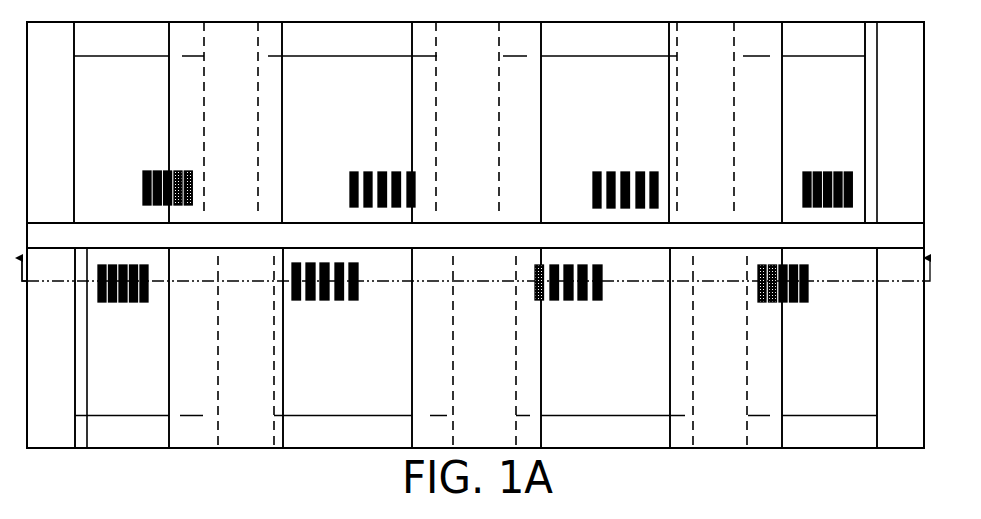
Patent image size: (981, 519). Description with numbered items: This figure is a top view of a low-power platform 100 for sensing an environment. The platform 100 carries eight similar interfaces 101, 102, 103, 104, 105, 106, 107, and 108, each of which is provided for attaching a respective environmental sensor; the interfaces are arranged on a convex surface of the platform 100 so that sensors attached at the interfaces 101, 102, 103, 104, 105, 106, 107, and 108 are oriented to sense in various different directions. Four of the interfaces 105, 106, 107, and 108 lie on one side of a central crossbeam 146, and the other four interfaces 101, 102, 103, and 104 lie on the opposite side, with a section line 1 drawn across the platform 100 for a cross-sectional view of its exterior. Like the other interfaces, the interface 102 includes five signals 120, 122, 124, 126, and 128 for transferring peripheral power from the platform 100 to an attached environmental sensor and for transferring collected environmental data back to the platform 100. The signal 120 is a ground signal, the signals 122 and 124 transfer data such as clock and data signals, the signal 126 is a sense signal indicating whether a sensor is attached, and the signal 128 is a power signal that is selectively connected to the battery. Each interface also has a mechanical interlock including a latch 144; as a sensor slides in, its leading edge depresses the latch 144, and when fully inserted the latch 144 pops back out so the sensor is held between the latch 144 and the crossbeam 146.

The low-power platform 100 is at (62, 468).
The section 1- 1 is at (479, 283).
The interface 101 is at (162, 367).
The interface 102 is at (378, 367).
The interface 103 is at (620, 367).
The interface 104 is at (828, 367).
The interface 105 is at (155, 116).
The interface 106 is at (362, 116).
The interface 107 is at (605, 116).
The interface 108 is at (822, 116).
The ground signal 120 is at (358, 265).
The data signal 122 is at (337, 300).
The data signal 124 is at (323, 263).
The sense signal 126 is at (310, 300).
The power signal 128 is at (295, 263).
The latch 144 is at (361, 415).
The crossbeam 146 is at (490, 246).